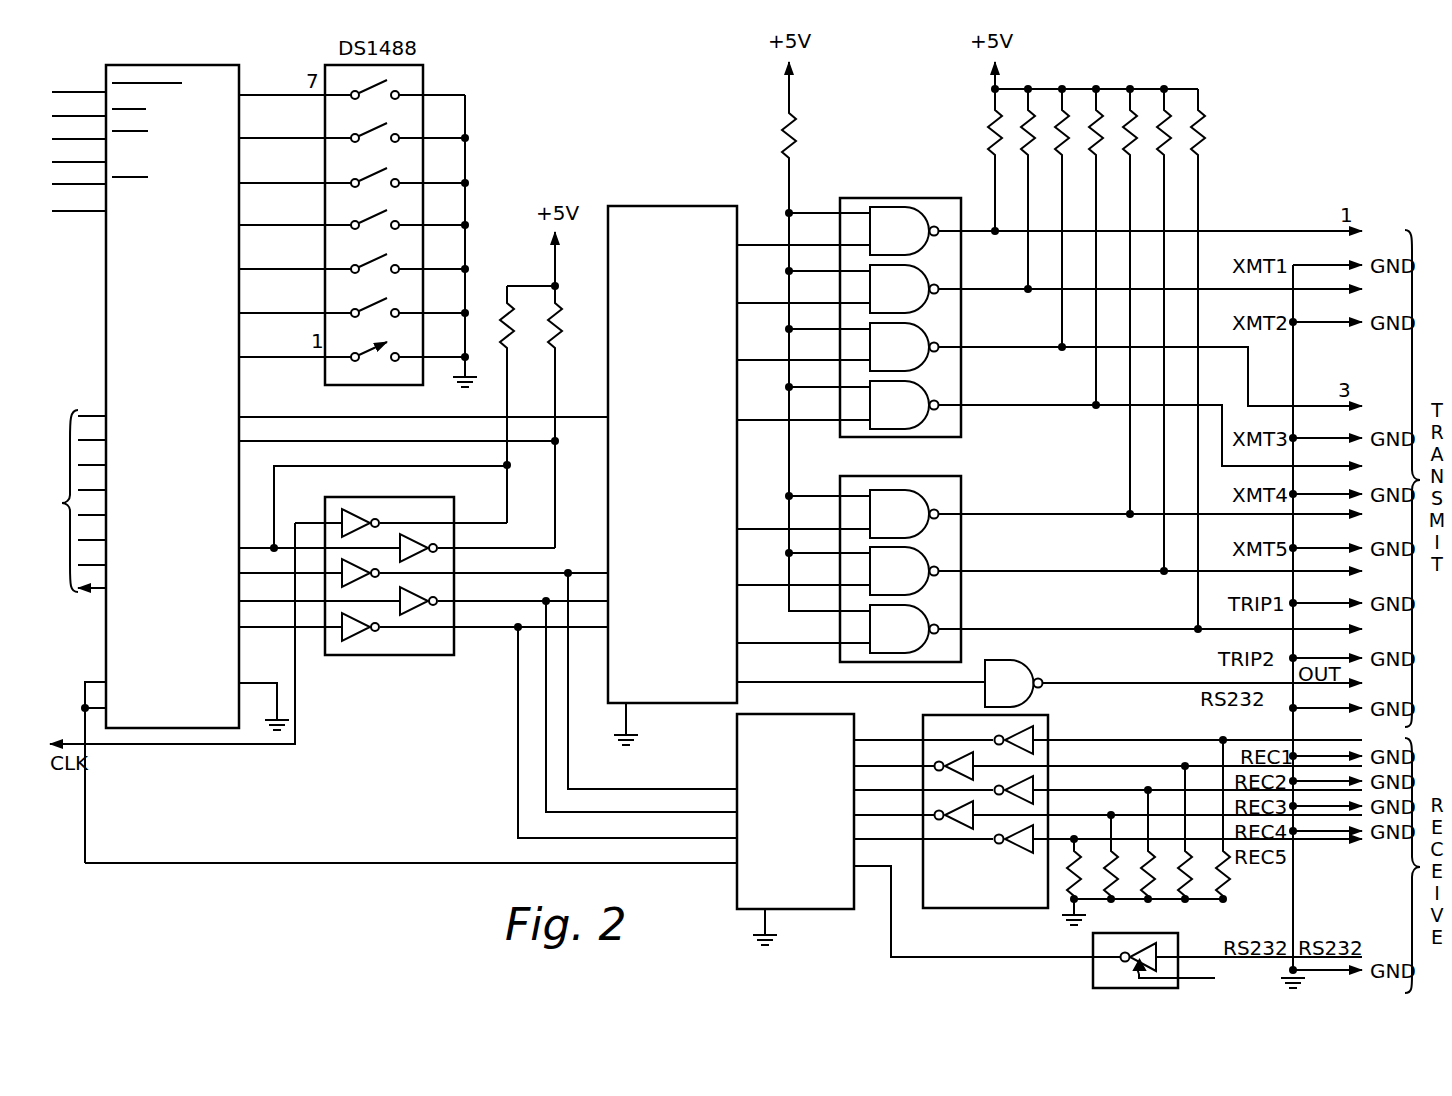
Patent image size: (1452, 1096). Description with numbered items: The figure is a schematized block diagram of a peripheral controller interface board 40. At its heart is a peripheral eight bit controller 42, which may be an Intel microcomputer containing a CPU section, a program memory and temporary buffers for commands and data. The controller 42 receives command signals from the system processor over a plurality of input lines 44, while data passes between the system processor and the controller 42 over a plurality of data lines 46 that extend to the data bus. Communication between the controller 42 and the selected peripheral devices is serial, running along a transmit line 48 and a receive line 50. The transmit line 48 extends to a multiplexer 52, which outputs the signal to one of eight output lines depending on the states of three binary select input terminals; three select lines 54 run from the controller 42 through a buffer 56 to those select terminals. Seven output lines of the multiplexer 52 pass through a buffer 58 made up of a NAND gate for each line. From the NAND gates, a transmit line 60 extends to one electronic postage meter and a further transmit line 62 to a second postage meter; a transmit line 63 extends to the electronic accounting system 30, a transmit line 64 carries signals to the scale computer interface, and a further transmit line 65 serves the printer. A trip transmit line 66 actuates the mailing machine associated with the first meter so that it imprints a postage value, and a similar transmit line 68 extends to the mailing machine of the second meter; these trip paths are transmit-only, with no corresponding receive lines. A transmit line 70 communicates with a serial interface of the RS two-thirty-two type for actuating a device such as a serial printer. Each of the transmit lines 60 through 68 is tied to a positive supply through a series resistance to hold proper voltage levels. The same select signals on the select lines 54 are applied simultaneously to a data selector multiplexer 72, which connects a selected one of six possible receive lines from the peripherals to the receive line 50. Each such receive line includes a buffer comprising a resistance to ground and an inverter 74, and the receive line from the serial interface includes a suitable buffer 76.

The electronic accounting system 30 is at (86, 759).
The peripheral controller interface board 40 is at (222, 893).
The peripheral eight bit controller 42 is at (106, 326).
The input lines 44 is at (84, 218).
The data lines 46 is at (92, 396).
The transmit line 48 is at (575, 420).
The receive line 50 is at (458, 864).
The multiplexer 52 is at (676, 378).
The select lines 54 is at (502, 636).
The buffer 56 is at (376, 656).
The buffer 58 is at (963, 420).
The transmit line 60 is at (1256, 232).
The transmit line 62 is at (1228, 292).
The transmit line 63 is at (1250, 388).
The transmit line 64 is at (1224, 432).
The transmit line 65 is at (1048, 514).
The trip transmit line 66 is at (1062, 571).
The transmit line 68 is at (1090, 629).
The transmit line 70 is at (1140, 683).
The data selector multiplexer 72 is at (793, 771).
The inverter 74 is at (975, 908).
The buffer 76 is at (1178, 936).